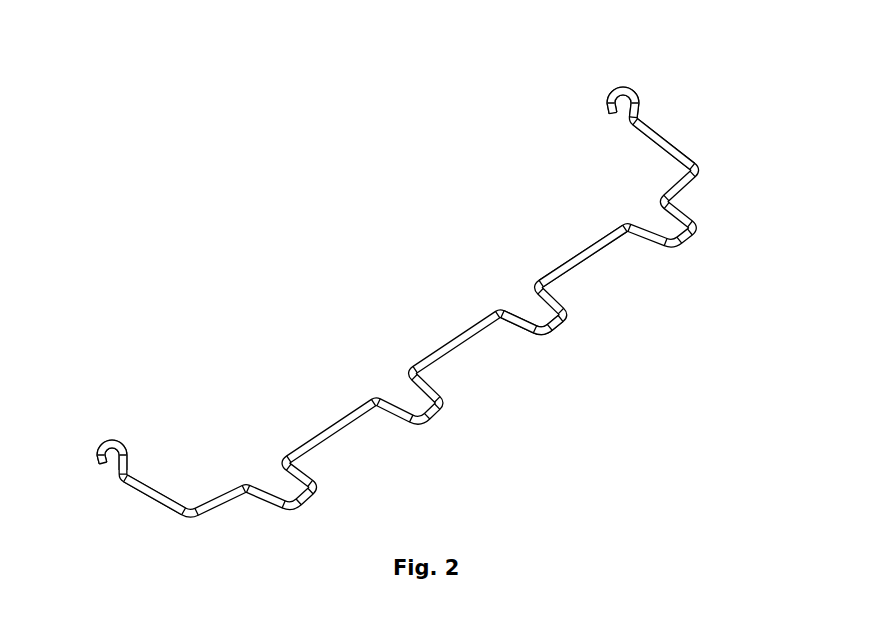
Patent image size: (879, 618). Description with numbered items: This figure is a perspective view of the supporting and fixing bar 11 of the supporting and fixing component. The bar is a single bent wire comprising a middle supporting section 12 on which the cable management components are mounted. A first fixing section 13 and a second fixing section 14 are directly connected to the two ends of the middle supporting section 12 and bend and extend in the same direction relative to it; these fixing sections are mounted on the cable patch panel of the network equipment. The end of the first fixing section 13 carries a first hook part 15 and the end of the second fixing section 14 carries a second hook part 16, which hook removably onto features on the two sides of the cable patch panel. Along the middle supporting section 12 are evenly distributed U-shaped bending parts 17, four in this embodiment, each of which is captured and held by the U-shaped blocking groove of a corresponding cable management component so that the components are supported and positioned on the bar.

The supporting and fixing bar 11 is at (473, 330).
The middle supporting section 12 is at (590, 248).
The first fixing section 13 is at (655, 142).
The second fixing section 14 is at (165, 502).
The first hook part 15 is at (630, 95).
The second hook part 16 is at (122, 440).
The U-shaped bending part 17 is at (557, 326).